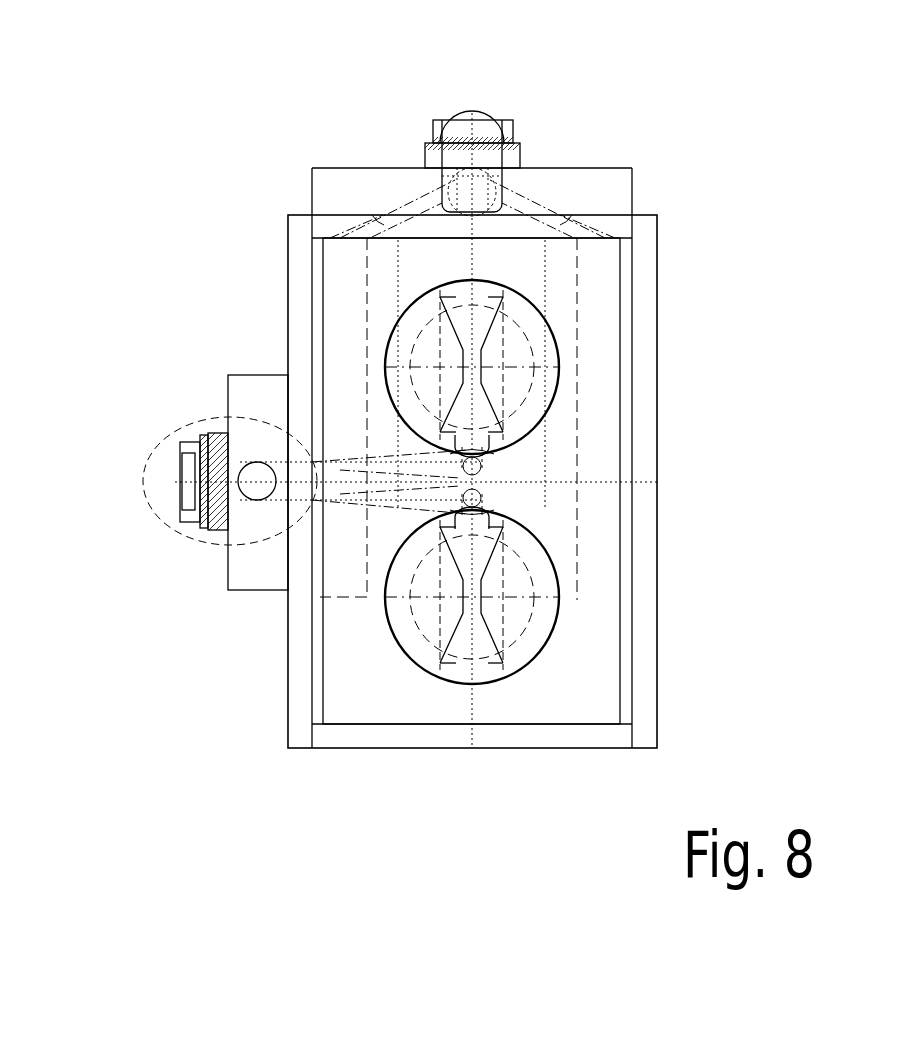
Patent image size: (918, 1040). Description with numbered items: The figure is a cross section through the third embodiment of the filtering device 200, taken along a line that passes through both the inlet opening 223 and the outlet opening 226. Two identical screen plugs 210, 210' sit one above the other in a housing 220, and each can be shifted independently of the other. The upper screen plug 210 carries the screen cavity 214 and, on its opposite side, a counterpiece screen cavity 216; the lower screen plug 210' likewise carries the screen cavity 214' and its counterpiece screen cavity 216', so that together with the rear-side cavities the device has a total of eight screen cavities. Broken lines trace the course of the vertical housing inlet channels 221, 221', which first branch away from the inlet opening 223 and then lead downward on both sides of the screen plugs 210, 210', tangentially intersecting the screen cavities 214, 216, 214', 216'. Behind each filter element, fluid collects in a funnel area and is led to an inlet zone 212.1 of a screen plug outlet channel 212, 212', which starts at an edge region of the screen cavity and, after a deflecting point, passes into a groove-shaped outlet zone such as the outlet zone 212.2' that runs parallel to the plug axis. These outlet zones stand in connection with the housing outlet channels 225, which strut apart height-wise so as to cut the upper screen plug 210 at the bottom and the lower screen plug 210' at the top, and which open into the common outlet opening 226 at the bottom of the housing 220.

The filtering device 200 is at (138, 104).
The screen plug 210 is at (576, 367).
The screen plug 210' is at (579, 597).
The screen plug outlet channel 212 is at (270, 380).
The screen plug outlet channel 212' is at (269, 563).
The inlet zone 212.1 is at (460, 447).
The outlet zone 212.2' is at (252, 515).
The screen cavity 214 is at (275, 351).
The screen cavity 214' is at (272, 595).
The screen cavity 216 is at (589, 344).
The screen cavity 216' is at (591, 580).
The housing 220 is at (597, 273).
The housing inlet channel 221 is at (392, 129).
The housing inlet channel 221' is at (552, 129).
The inlet opening 223 is at (469, 116).
The housing outlet channel 225 is at (360, 483).
The outlet opening 226 is at (178, 490).